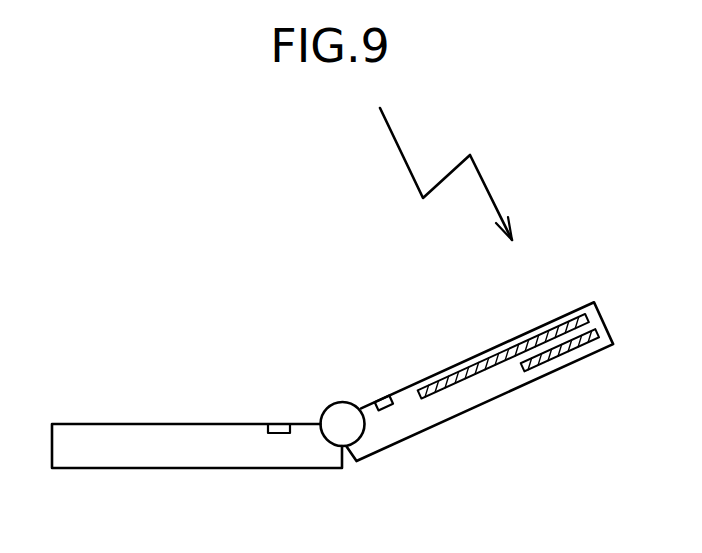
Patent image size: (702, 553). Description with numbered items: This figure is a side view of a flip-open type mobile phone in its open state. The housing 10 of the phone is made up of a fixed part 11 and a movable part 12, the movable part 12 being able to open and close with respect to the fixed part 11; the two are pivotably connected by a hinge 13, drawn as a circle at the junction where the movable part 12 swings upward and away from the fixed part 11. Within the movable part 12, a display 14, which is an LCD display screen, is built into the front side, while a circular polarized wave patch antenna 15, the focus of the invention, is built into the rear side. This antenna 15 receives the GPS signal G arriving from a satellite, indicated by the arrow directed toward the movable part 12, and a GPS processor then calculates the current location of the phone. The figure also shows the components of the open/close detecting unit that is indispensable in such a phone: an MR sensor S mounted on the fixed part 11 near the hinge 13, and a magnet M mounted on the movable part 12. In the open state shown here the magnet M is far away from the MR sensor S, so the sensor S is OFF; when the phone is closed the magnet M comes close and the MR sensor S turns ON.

The housing 10 is at (250, 315).
The fixed part 11 is at (247, 462).
The movable part 12 is at (447, 397).
The hinge 13 is at (338, 418).
The display 14 is at (542, 322).
The circular polarized wave patch antenna 15 is at (550, 365).
The MR sensor S is at (280, 425).
The magnet M is at (383, 398).
The GPS signal G is at (397, 141).